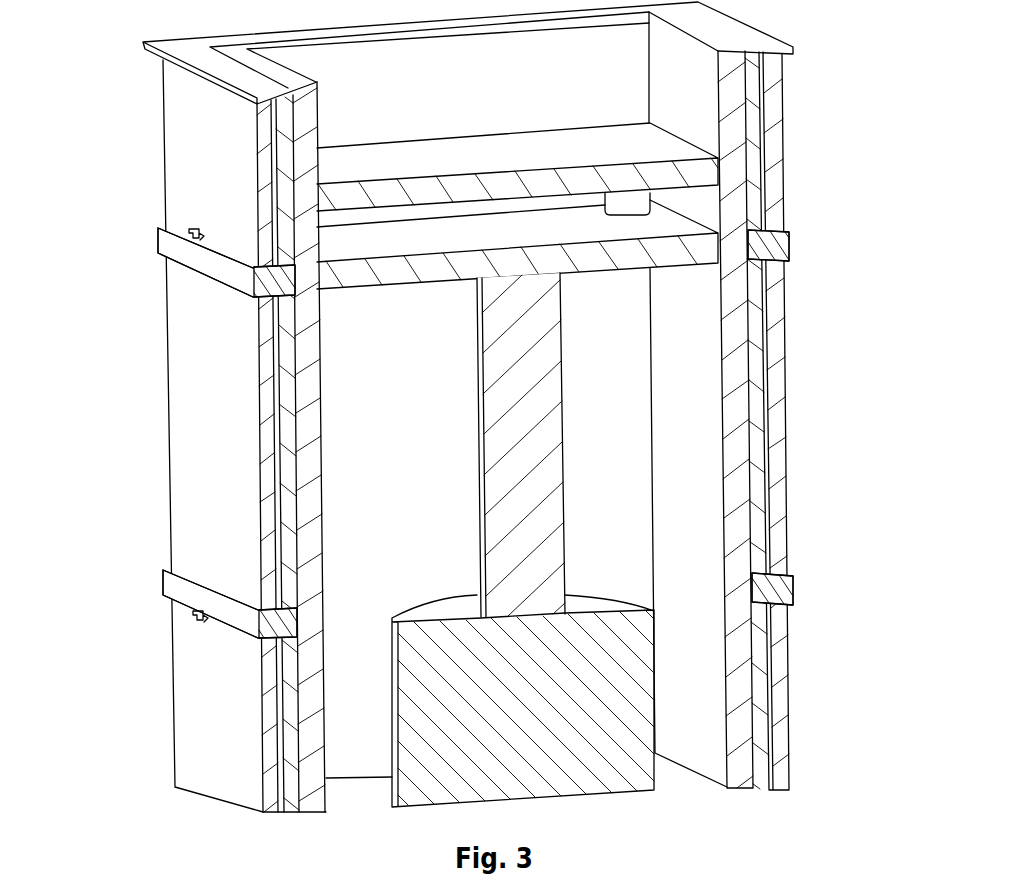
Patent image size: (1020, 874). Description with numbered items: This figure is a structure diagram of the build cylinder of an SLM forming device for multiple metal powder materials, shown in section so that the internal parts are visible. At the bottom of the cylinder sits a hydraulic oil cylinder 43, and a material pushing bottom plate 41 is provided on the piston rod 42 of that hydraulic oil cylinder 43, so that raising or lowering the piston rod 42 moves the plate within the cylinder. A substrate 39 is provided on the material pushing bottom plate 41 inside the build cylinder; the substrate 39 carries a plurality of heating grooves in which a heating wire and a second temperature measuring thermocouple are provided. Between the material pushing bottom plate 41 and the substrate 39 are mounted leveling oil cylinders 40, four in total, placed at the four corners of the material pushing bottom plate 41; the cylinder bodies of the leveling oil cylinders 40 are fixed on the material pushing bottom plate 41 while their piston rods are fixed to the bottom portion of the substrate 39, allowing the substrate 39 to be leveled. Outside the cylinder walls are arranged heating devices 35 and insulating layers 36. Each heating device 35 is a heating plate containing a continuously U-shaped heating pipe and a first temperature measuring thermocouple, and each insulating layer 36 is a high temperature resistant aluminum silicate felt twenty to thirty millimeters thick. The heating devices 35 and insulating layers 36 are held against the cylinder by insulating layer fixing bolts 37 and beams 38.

The heating device 35 is at (283, 111).
The insulating layer 36 is at (256, 162).
The insulating layer fixing bolt 37 is at (190, 243).
The beam 38 is at (225, 278).
The substrate 39 is at (693, 173).
The leveling oil cylinder 40 is at (635, 203).
The material pushing bottom plate 41 is at (673, 250).
The piston rod 42 is at (543, 368).
The hydraulic oil cylinder 43 is at (610, 688).